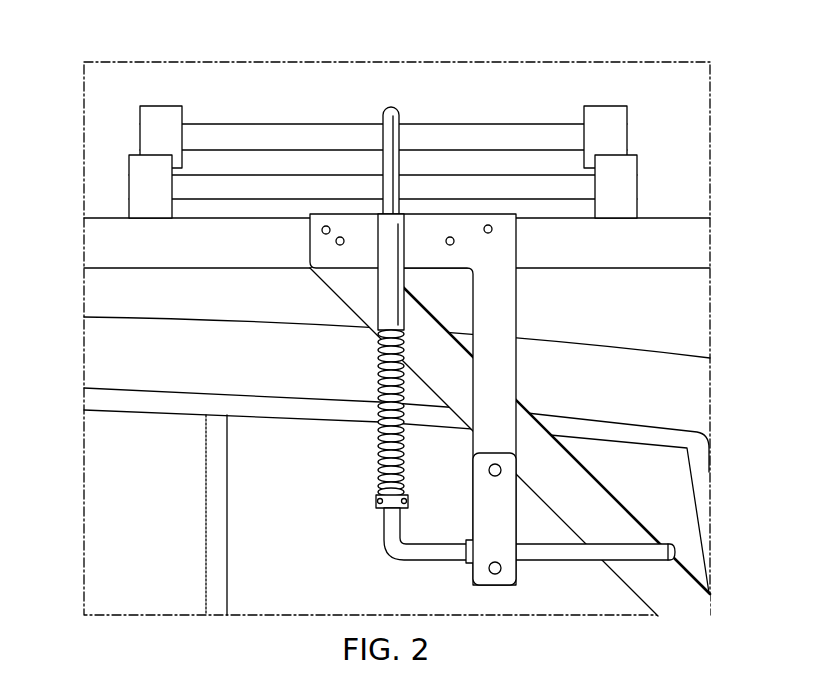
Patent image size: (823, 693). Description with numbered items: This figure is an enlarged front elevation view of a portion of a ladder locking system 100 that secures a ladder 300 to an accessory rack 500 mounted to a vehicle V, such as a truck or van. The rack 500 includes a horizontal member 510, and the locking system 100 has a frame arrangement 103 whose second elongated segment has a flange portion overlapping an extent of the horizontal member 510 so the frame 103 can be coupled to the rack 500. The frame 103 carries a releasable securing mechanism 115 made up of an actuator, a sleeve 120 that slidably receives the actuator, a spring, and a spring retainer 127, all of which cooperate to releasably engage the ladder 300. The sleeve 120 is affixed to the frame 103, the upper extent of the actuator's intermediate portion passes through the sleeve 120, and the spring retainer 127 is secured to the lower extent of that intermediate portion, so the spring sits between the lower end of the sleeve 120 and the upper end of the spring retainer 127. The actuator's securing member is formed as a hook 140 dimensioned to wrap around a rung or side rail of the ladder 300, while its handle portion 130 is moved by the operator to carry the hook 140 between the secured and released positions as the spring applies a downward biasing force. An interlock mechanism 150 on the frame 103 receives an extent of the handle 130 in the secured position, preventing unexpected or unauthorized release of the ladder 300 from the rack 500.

The ladder locking system 100 is at (364, 114).
The frame arrangement 103 is at (517, 316).
The releasable securing mechanism 115 is at (358, 456).
The sleeve 120 is at (379, 287).
The spring retainer 127 is at (374, 502).
The handle portion 130 is at (590, 562).
The hook 140 is at (377, 110).
The interlock mechanism 150 is at (518, 598).
The ladder 300 is at (166, 90).
The accessory rack 500 is at (370, 368).
The horizontal member 510 is at (102, 240).
The vehicle V is at (673, 368).